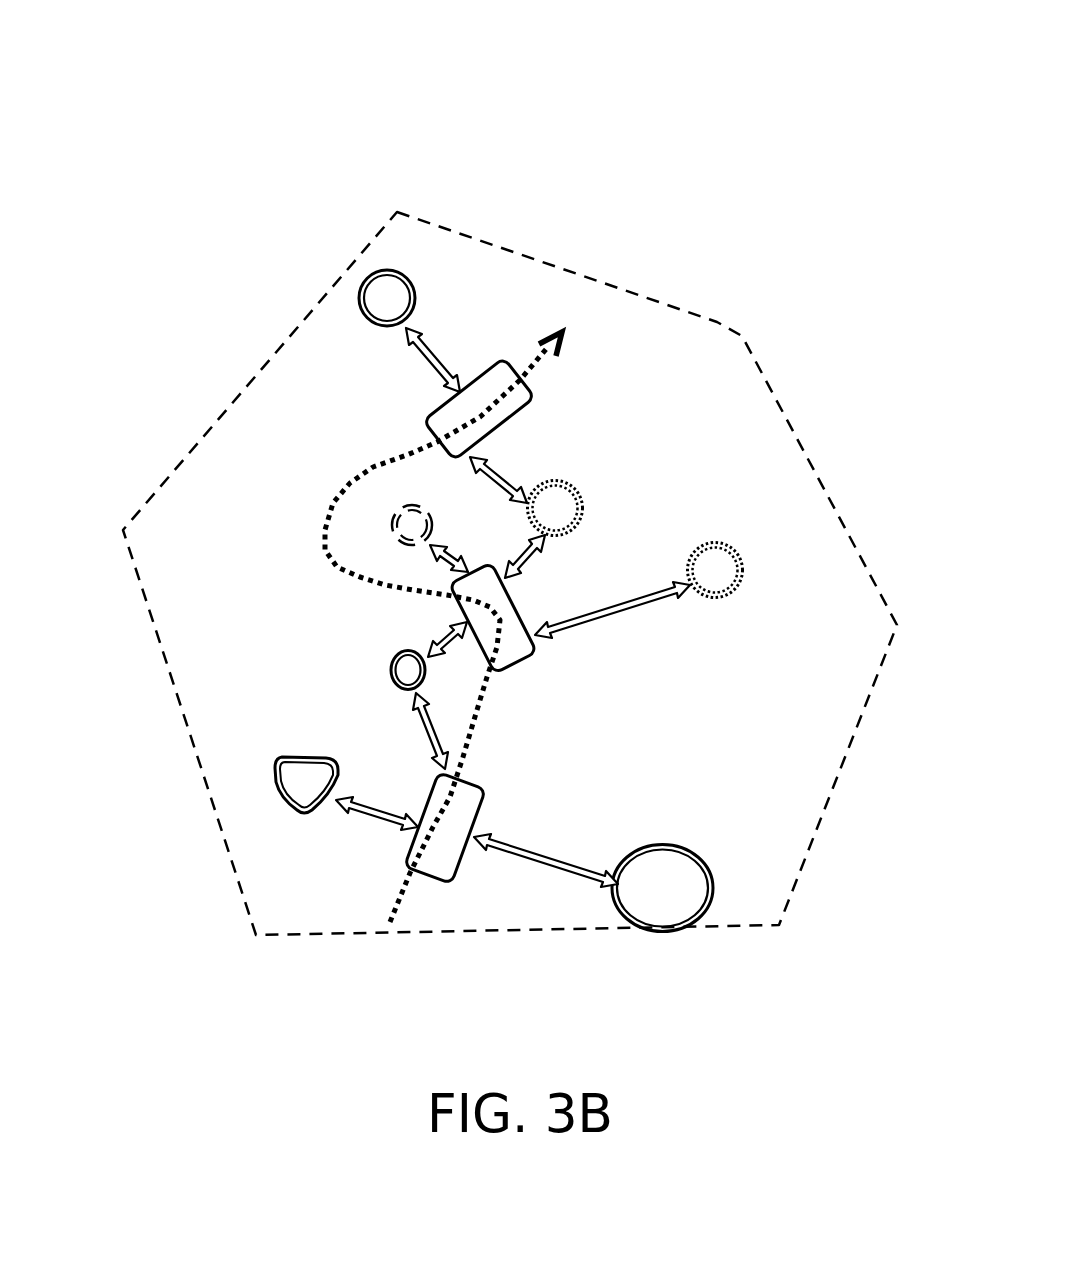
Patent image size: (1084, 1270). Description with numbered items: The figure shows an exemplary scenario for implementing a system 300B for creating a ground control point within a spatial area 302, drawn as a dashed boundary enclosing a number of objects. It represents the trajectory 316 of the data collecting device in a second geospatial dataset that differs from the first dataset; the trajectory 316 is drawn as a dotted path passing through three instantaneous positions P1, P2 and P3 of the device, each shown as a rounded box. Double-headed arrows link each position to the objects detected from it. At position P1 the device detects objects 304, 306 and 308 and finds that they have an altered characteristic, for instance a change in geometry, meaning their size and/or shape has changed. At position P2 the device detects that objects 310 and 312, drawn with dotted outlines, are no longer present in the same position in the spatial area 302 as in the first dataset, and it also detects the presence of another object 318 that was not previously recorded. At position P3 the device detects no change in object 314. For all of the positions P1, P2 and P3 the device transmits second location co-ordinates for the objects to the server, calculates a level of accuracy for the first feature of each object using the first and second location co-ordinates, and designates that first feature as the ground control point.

The system for creating a ground control point 300B is at (812, 58).
The spatial area 302 is at (510, 573).
The object 304 is at (699, 878).
The object 306 is at (303, 754).
The object 308 is at (368, 654).
The object 310 is at (766, 565).
The object 312 is at (613, 501).
The object 314 is at (438, 238).
The trajectory 316 is at (352, 627).
The another object 318 is at (292, 445).
The position P1 is at (497, 905).
The position P2 is at (317, 533).
The position P3 is at (345, 362).